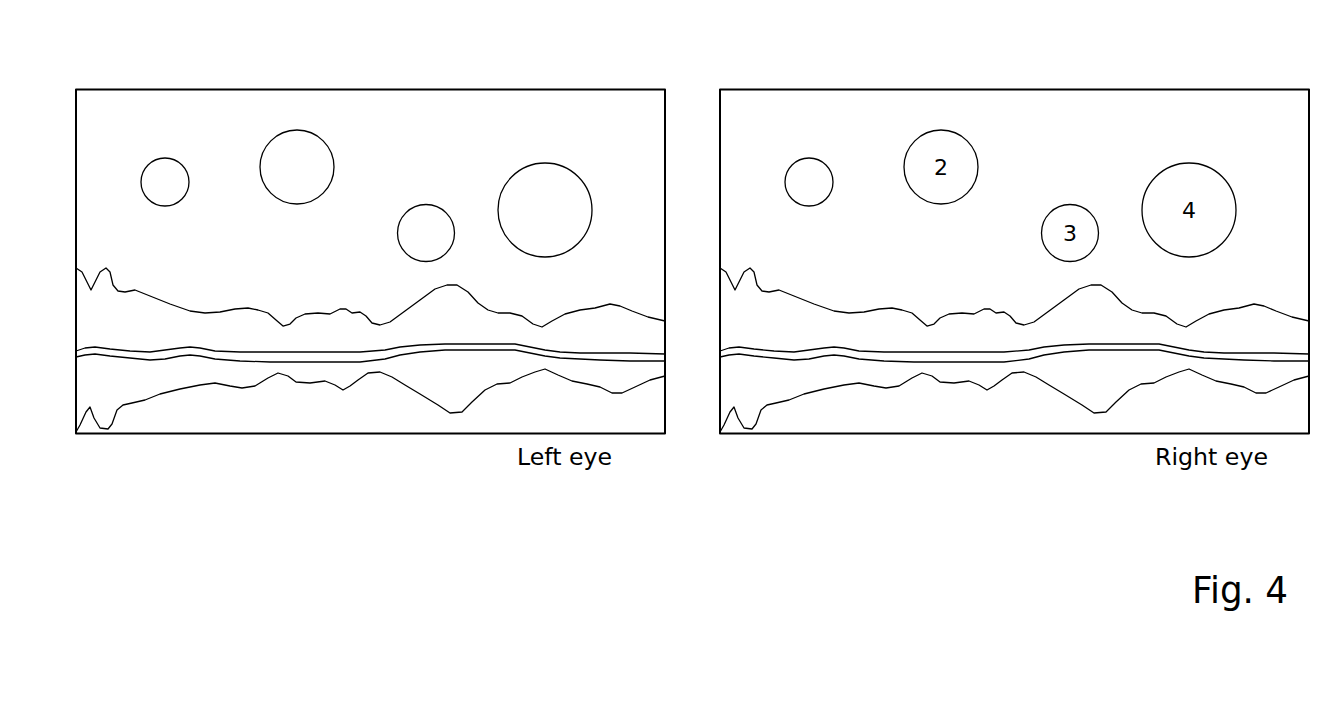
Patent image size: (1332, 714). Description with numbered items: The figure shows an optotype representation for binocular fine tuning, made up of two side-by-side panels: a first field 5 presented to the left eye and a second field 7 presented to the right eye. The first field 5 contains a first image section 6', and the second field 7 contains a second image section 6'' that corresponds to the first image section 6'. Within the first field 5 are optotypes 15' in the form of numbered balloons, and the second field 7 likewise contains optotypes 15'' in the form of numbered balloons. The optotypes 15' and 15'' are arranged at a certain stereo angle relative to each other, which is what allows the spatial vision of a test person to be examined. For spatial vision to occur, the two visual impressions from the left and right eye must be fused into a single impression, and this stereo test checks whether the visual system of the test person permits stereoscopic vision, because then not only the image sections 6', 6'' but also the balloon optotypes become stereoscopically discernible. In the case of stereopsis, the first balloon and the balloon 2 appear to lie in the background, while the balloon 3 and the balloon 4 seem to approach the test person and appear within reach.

The first field 5 is at (421, 90).
The second field 7 is at (1064, 90).
The optotypes 15' is at (165, 118).
The optotypes 15'' is at (809, 118).
The first image section 6' is at (241, 119).
The second image section 6'' is at (887, 119).
The balloon 2 is at (297, 167).
The balloon 3 is at (426, 233).
The balloon 4 is at (545, 210).